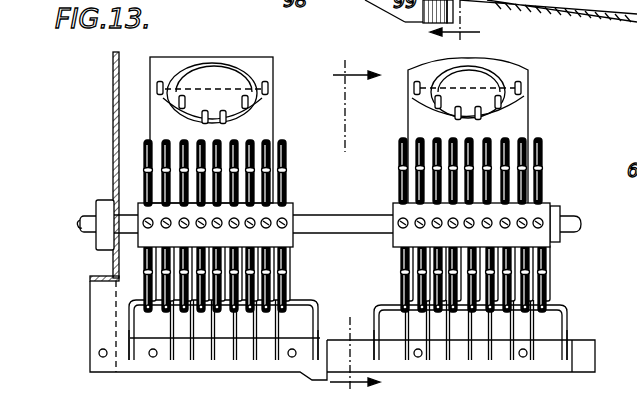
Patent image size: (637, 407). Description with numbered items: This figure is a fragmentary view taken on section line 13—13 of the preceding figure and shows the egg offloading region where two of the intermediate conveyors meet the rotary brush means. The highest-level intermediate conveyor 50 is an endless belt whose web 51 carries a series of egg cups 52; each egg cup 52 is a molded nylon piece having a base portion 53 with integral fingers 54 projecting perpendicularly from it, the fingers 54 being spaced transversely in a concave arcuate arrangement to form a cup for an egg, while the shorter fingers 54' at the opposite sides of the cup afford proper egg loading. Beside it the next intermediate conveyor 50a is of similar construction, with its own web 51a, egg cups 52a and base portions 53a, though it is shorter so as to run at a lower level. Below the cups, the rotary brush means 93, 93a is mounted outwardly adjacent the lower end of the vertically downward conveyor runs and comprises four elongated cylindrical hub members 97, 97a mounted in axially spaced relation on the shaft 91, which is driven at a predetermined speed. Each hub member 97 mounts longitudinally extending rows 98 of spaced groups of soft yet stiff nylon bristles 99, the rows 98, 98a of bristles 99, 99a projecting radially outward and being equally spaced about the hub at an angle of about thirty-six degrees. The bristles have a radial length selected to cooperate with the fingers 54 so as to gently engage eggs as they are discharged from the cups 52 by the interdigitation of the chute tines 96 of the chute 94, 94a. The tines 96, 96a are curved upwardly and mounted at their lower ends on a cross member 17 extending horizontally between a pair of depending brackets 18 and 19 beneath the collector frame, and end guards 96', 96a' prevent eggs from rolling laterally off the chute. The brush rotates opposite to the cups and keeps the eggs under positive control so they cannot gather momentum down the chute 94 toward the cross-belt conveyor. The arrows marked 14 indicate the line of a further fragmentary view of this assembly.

The section line 13 is at (471, 21).
The section line 14 is at (340, 221).
The cross member 17 is at (98, 355).
The depending bracket 18 is at (115, 325).
The depending bracket 19 is at (380, 12).
The intermediate conveyor 50 is at (155, 70).
The intermediate conveyor 50a is at (587, 80).
The web 51 is at (250, 72).
The web 51a is at (522, 124).
The egg cup 52 is at (176, 90).
The egg cup 52a is at (425, 108).
The base portion 53 is at (262, 88).
The base portion 53a is at (440, 118).
The fingers 54 is at (313, 112).
The shorter fingers 54' is at (296, 95).
The shaft 91 is at (334, 222).
The rotary brush means 93 is at (134, 262).
The rotary brush means 93a is at (590, 258).
The chute 94 is at (165, 316).
The chute 94a is at (617, 287).
The tines 96 is at (254, 313).
The end guards 96' is at (207, 311).
The tines 96a is at (518, 330).
The end guards 96a' is at (487, 324).
The hub member 97 is at (130, 205).
The hub member 97a is at (563, 167).
The rows of bristles 98 is at (288, 160).
The rows of bristles 98a is at (603, 149).
The bristles 99 is at (150, 158).
The bristles 99a is at (433, 187).